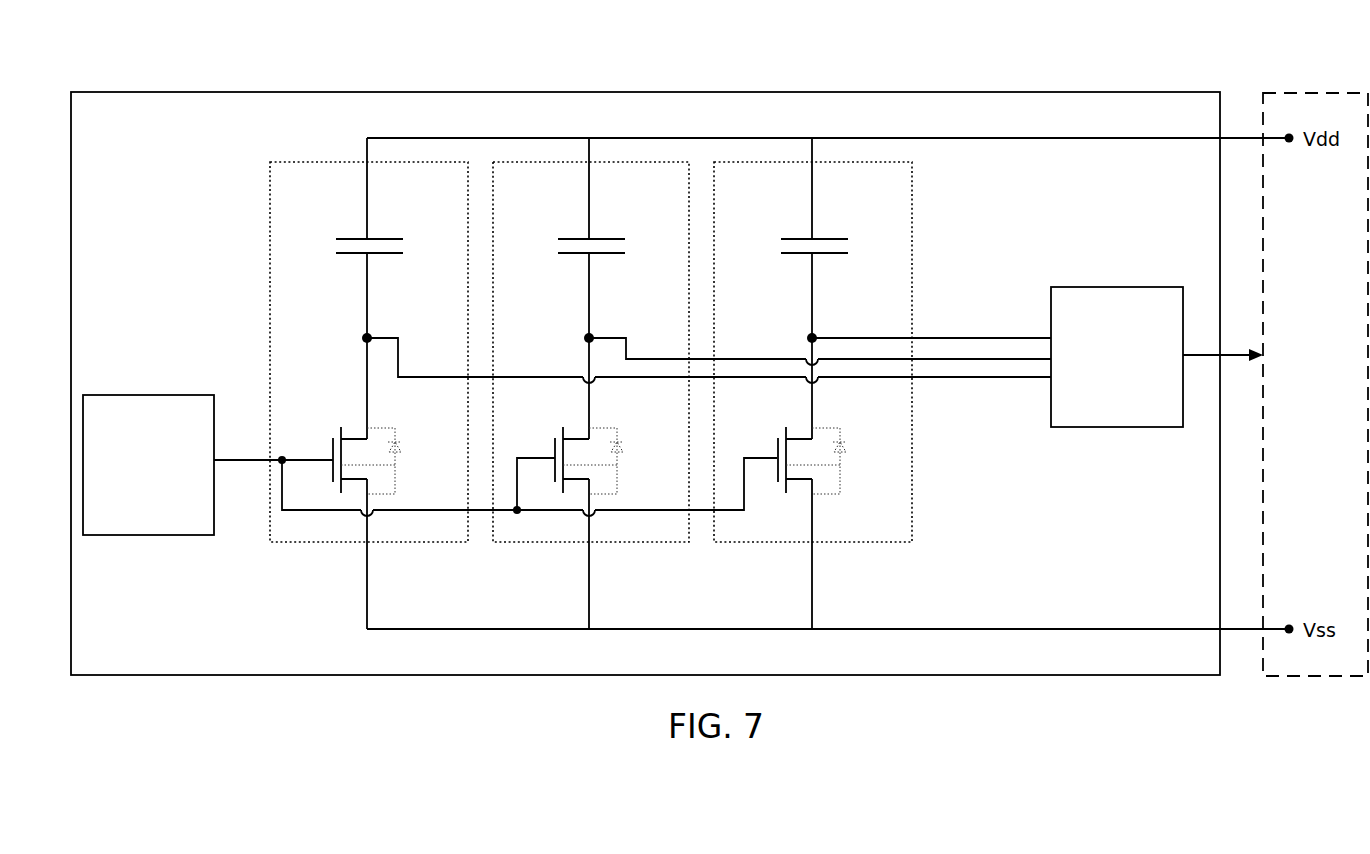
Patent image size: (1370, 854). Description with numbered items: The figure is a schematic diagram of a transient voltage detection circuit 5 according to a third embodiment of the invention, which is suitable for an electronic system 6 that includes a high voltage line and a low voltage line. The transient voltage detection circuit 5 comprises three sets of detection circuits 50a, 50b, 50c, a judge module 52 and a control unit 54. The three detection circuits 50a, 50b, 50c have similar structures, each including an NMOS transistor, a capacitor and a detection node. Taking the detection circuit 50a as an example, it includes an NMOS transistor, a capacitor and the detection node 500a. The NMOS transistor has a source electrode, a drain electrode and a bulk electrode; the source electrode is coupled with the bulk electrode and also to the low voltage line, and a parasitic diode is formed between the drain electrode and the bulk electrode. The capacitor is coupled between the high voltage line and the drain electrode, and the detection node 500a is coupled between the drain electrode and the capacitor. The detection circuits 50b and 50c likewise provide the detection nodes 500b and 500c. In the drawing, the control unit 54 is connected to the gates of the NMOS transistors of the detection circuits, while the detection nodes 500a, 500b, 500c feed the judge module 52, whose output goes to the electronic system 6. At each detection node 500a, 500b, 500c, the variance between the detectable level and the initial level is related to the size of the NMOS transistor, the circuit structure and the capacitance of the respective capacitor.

The transient voltage detection circuit 5 is at (490, 92).
The electronic system 6 is at (1302, 92).
The judge module 52 is at (1100, 287).
The control unit 54 is at (164, 535).
The detection circuit 50a is at (438, 542).
The detection circuit 50b is at (648, 542).
The detection circuit 50c is at (875, 542).
The detection node 500a is at (367, 338).
The detection node 500b is at (589, 338).
The detection node 500c is at (812, 338).